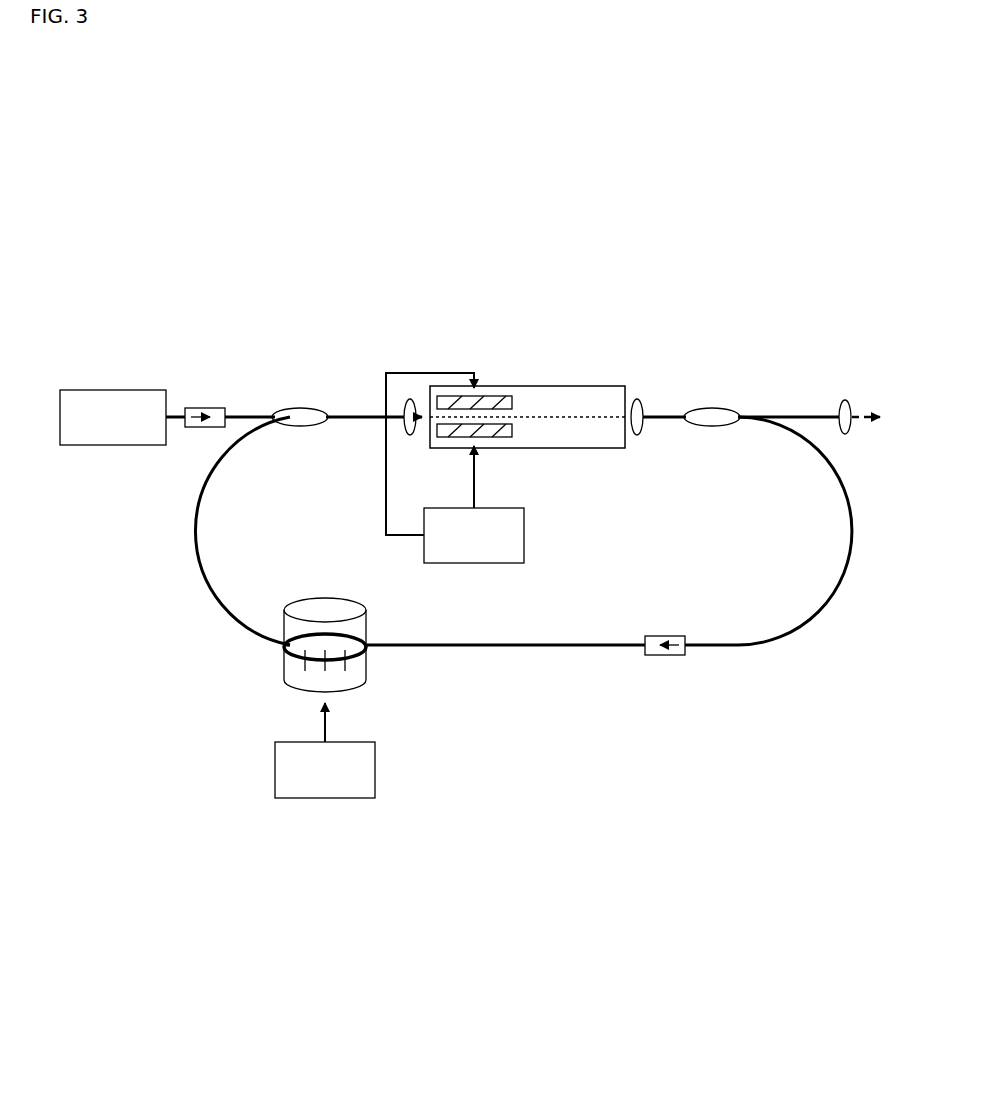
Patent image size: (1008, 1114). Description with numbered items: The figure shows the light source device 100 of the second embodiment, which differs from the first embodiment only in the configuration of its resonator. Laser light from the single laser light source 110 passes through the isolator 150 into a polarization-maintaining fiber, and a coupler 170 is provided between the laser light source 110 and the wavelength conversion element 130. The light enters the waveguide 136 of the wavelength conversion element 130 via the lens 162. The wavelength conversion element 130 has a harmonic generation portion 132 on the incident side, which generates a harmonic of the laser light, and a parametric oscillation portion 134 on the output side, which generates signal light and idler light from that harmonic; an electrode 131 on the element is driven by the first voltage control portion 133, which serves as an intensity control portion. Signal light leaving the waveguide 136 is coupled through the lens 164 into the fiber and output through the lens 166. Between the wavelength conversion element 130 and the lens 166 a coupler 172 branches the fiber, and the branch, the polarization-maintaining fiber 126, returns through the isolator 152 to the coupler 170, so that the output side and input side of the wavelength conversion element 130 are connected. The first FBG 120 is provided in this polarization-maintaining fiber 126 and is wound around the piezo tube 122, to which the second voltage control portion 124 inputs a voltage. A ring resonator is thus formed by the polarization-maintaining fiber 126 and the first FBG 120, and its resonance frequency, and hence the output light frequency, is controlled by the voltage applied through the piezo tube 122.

The light source device 100 is at (858, 265).
The laser light source 110 is at (110, 390).
The isolator 150 is at (206, 408).
The coupler 170 is at (298, 408).
The lens 162 is at (408, 400).
The wavelength conversion element 130 is at (593, 325).
The harmonic generation portion 132 is at (497, 430).
The parametric oscillation portion 134 is at (543, 417).
The electrode 131 is at (505, 444).
The waveguide 136 is at (597, 421).
The first voltage control portion 133 is at (470, 565).
The lens 164 is at (636, 398).
The coupler 172 is at (712, 408).
The lens 166 is at (845, 399).
The polarization-maintaining fiber 126 is at (592, 641).
The isolator 152 is at (672, 634).
The first FBG 120 is at (322, 593).
The piezo tube 122 is at (304, 600).
The second voltage control portion 124 is at (322, 800).